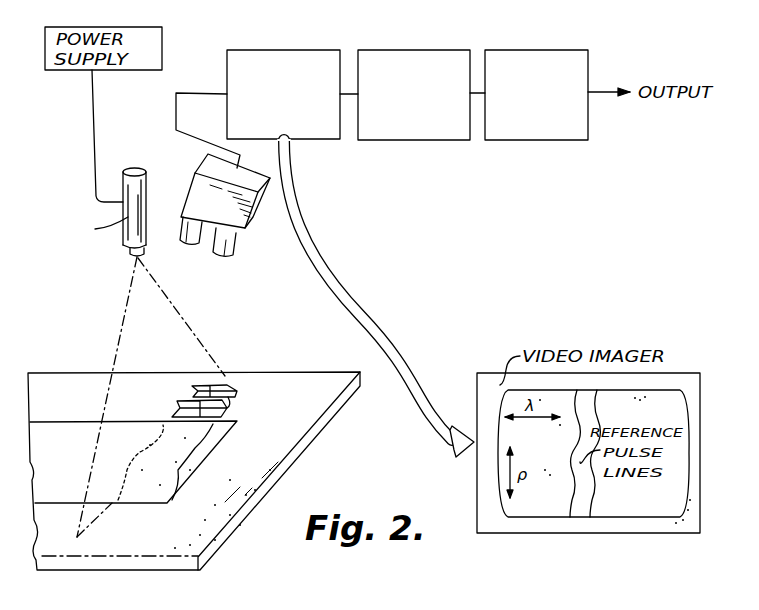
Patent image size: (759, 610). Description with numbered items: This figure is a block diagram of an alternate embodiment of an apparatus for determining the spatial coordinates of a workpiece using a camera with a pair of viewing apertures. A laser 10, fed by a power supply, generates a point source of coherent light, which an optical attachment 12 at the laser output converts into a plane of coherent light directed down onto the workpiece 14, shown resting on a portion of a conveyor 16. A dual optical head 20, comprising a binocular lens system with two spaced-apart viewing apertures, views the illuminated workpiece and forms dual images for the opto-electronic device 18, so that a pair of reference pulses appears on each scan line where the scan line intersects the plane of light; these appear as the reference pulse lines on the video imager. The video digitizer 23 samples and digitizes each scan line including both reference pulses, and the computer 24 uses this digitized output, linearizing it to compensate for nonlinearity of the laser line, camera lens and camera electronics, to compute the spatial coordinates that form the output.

The laser 10 is at (148, 178).
The optical attachment 12 is at (127, 252).
The workpiece 14 is at (53, 433).
The conveyor 16 is at (296, 382).
The opto-electronic device 18 is at (283, 50).
The dual optical head 20 is at (256, 219).
The video digitizer 23 is at (413, 50).
The computer 24 is at (545, 140).